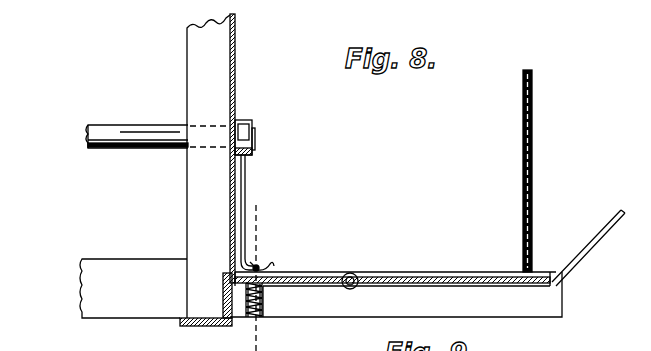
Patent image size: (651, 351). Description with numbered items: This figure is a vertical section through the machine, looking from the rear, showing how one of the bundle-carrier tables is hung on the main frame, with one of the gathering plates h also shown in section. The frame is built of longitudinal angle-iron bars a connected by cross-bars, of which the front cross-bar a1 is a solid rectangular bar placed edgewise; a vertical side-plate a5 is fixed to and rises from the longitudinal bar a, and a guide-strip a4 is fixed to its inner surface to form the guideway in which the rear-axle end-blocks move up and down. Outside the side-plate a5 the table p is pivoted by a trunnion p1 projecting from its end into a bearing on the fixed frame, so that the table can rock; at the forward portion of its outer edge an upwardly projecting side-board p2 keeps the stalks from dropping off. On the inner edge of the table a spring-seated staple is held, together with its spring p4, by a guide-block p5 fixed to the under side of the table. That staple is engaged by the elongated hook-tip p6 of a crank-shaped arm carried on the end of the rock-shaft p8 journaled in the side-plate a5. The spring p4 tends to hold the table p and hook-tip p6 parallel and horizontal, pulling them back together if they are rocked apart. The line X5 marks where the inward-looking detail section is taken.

The longitudinal angle-iron bar a is at (210, 326).
The front cross-bar a1 is at (570, 325).
The guide-strip a4 is at (203, 66).
The vertical side-plate a5 is at (263, 56).
The gathering plate h is at (539, 171).
The table p is at (406, 277).
The trunnion p1 is at (356, 268).
The side-board p2 is at (246, 190).
The spring p4 is at (252, 320).
The guide-block p5 is at (265, 302).
The hook-tip p6 is at (271, 264).
The rock-shaft p8 is at (145, 130).
The section line X5 is at (258, 210).